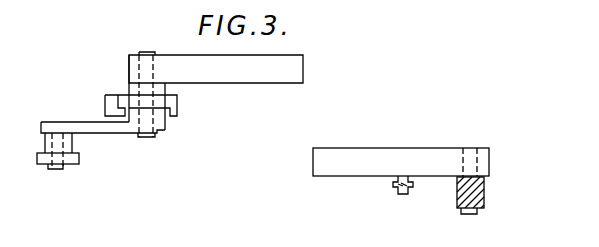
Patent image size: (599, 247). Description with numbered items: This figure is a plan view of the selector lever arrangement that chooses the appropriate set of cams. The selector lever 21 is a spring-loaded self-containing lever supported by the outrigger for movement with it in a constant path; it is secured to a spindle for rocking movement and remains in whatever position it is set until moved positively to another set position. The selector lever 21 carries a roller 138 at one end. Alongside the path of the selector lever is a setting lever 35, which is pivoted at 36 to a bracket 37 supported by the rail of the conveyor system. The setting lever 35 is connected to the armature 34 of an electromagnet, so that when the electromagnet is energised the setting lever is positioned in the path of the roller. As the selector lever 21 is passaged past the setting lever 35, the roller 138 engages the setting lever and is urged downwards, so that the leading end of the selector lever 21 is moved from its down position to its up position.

The selector lever 21 is at (88, 124).
The roller 138 is at (74, 166).
The setting lever 35 is at (332, 165).
The armature 34 is at (407, 195).
The bracket 37 is at (485, 182).
The pivot 36 is at (477, 213).